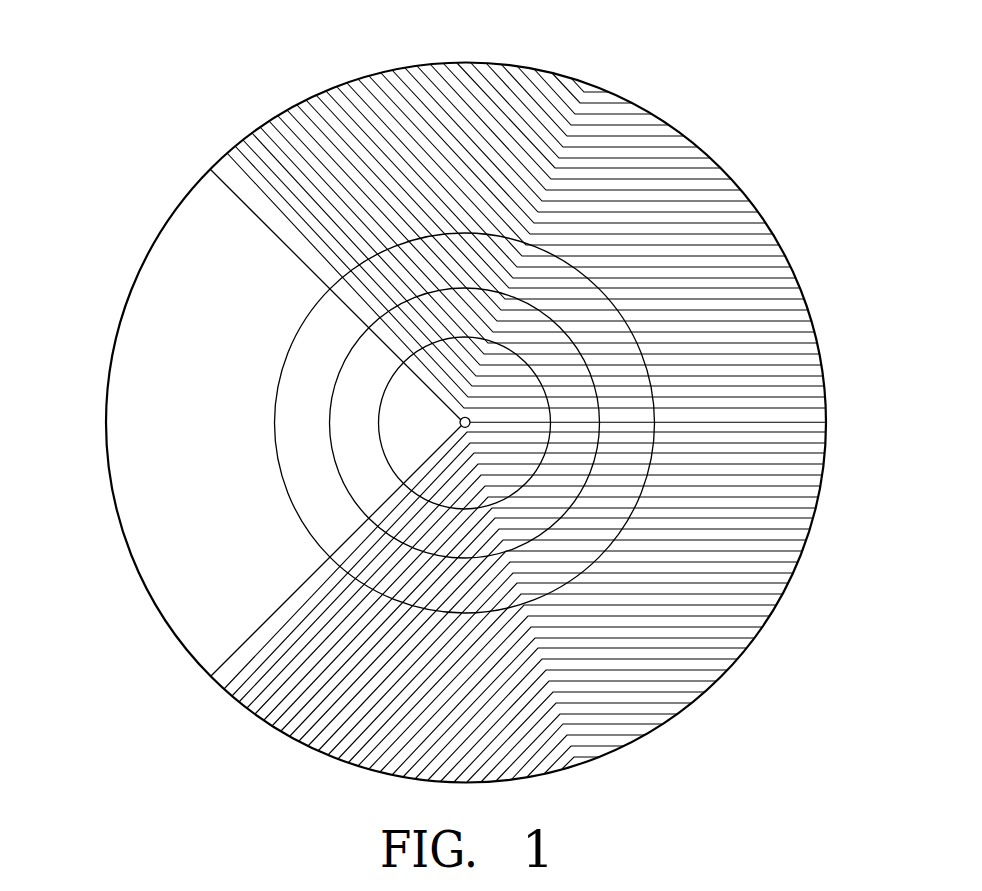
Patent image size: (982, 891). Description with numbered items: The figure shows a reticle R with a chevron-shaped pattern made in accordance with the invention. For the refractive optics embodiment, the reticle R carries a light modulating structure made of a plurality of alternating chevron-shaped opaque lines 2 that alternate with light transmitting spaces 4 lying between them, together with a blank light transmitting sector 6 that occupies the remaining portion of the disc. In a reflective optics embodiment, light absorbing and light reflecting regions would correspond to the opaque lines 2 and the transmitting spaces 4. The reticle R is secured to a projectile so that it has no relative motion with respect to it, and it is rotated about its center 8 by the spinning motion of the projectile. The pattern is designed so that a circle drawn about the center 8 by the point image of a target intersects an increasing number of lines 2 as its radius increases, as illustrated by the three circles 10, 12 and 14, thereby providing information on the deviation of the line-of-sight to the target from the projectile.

The reticle R is at (683, 77).
The chevron-shaped opaque lines 2 is at (713, 223).
The light transmitting spaces 4 is at (752, 263).
The blank light transmitting sector 6 is at (137, 341).
The center 8 is at (459, 422).
The circle 10 is at (387, 464).
The circle 12 is at (329, 453).
The circle 14 is at (276, 417).